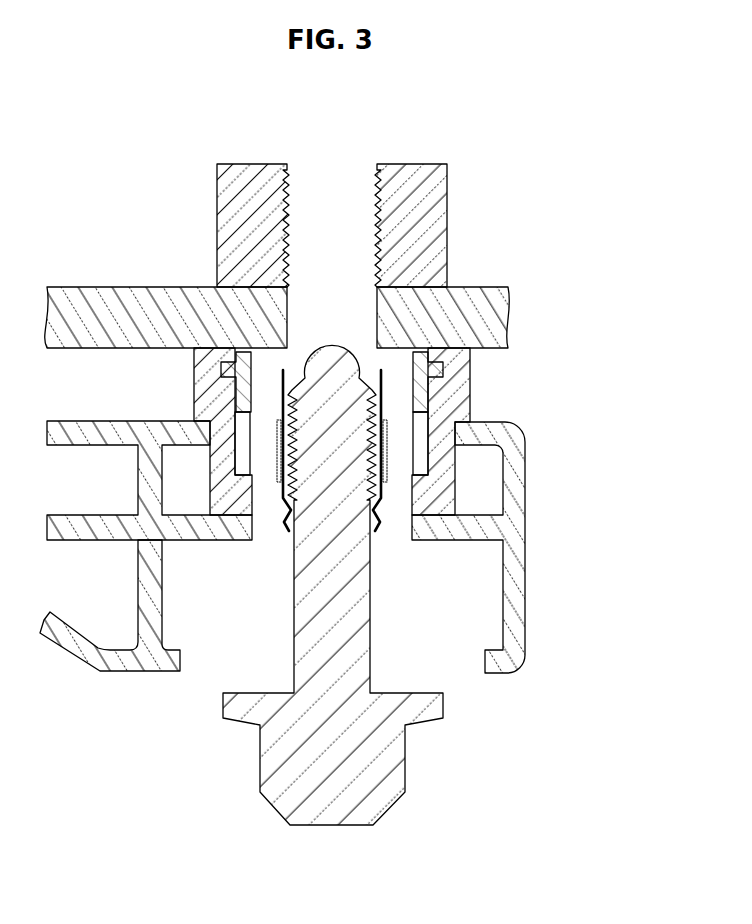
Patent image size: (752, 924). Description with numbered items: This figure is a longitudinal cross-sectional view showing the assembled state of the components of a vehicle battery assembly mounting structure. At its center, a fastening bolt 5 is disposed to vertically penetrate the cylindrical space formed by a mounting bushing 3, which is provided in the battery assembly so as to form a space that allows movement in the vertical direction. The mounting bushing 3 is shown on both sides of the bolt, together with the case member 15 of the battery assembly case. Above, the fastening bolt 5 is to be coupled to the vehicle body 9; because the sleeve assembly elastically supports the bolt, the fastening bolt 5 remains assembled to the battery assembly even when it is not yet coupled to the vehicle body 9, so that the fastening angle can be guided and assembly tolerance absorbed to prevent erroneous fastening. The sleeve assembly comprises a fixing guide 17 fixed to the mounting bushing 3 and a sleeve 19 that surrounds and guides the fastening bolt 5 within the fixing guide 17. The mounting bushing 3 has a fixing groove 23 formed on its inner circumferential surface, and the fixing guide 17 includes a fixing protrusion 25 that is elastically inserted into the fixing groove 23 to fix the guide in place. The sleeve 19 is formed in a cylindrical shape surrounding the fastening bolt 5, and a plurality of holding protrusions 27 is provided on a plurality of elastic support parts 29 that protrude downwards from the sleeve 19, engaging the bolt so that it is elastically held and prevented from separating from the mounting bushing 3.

The mounting bushing 3 is at (472, 392).
The fastening bolt 5 is at (397, 766).
The vehicle body 9 is at (478, 316).
The case member 15 is at (522, 543).
The fixing guide 17 is at (430, 352).
The sleeve 19 is at (283, 388).
The fixing groove 23 is at (248, 352).
The fixing protrusion 25 is at (432, 366).
The holding protrusions 27 is at (375, 522).
The elastic support parts 29 is at (284, 528).